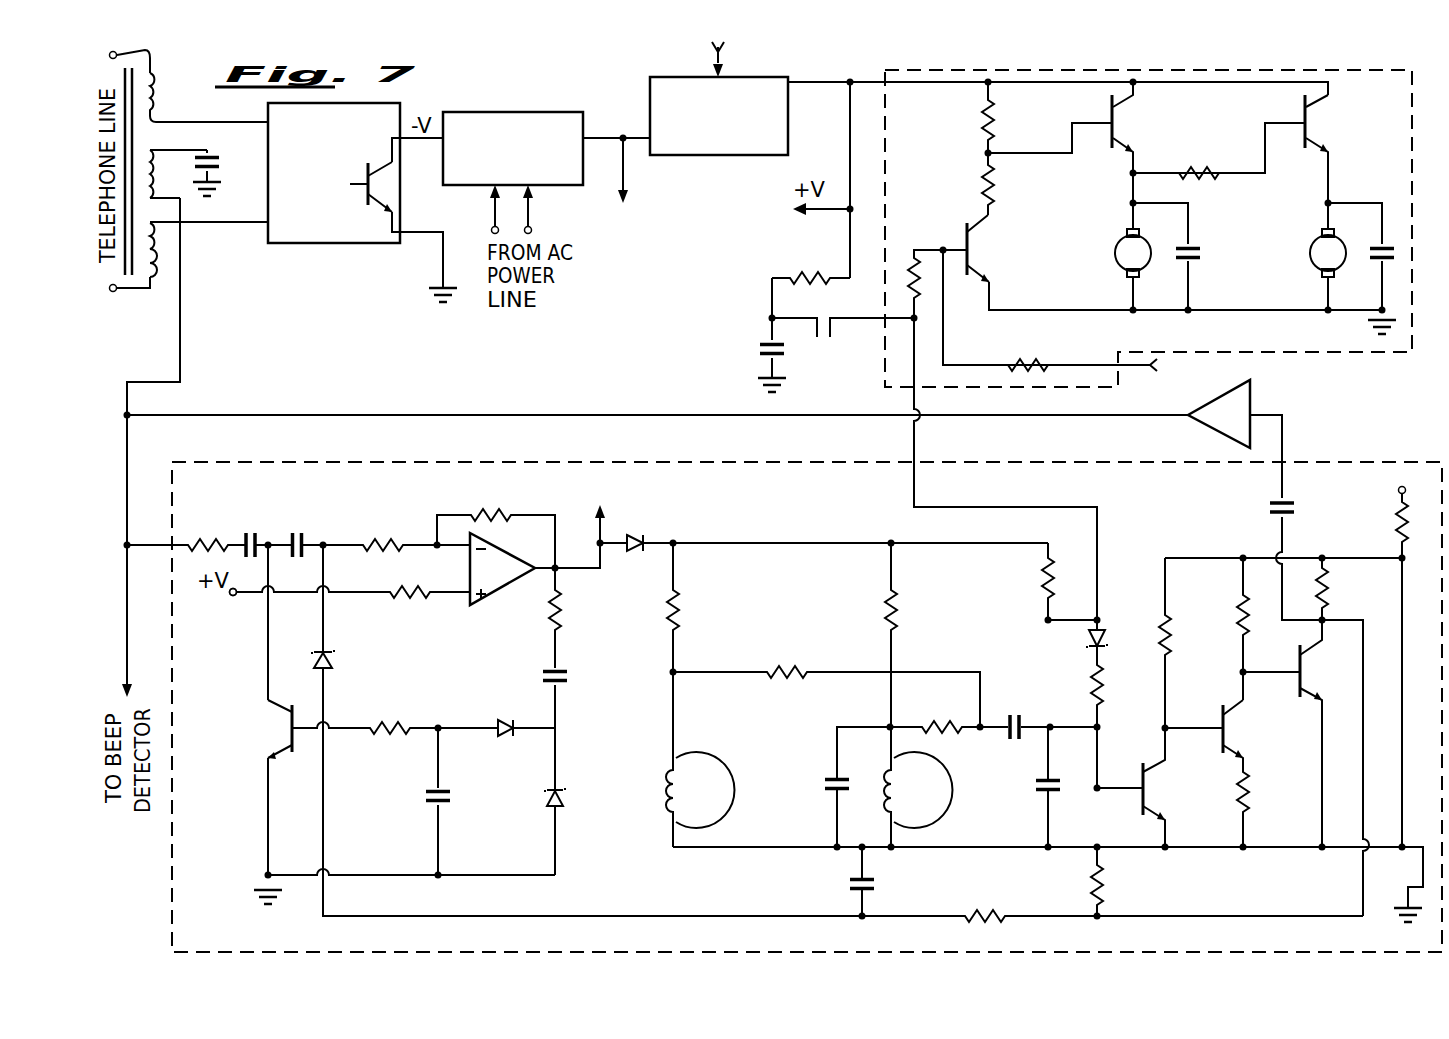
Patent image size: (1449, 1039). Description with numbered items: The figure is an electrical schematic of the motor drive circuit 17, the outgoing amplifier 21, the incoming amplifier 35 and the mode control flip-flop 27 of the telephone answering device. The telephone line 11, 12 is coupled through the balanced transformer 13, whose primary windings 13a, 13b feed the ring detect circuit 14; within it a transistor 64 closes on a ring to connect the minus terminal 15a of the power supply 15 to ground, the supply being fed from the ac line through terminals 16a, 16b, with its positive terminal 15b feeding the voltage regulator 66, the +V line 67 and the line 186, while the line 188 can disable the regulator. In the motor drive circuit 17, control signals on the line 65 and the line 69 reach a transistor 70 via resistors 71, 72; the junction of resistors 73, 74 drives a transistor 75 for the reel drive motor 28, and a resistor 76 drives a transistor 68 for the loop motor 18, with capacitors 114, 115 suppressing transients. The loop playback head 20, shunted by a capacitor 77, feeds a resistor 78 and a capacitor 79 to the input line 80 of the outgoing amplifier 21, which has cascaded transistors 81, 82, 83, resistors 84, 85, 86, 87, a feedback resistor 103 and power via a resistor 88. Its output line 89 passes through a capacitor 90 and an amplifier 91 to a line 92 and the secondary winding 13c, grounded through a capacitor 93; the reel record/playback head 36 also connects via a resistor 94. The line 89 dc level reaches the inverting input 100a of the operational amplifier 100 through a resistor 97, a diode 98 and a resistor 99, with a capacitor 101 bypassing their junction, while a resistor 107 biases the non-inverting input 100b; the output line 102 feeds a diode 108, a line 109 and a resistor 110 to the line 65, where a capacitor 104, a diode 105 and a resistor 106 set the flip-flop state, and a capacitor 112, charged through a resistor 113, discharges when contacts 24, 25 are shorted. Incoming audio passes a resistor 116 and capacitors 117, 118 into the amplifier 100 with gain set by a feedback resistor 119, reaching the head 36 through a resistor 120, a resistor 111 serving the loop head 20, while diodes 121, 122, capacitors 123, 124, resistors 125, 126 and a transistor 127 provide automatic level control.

The telephone line 11 is at (154, 47).
The telephone line 12 is at (113, 293).
The balanced transformer 13 is at (170, 80).
The primary winding 13a is at (157, 108).
The primary winding 13b is at (157, 262).
The secondary winding 13c is at (178, 174).
The ring detect circuit 14 is at (313, 250).
The power supply 15 is at (472, 186).
The minus terminal 15a is at (421, 141).
The positive terminal 15b is at (600, 141).
The terminal 16a is at (490, 232).
The terminal 16b is at (532, 230).
The motor drive circuit 17 is at (1312, 76).
The loop motor 18 is at (1311, 244).
The loop playback head 20 is at (952, 790).
The outgoing amplifier 21 is at (1152, 855).
The contact 24 is at (817, 337).
The contact 25 is at (830, 337).
The mode control flip-flop 27 is at (807, 707).
The reel drive motor 28 is at (1116, 244).
The incoming amplifier 35 is at (416, 826).
The reel record/playback head 36 is at (728, 780).
The transistor 64 is at (362, 175).
The line 65 is at (916, 440).
The voltage regulator 66 is at (711, 158).
The +V line 67 is at (848, 128).
The transistor 68 is at (1300, 100).
The line 69 is at (1128, 367).
The transistor 70 is at (962, 228).
The resistor 71 is at (910, 262).
The resistor 72 is at (1042, 340).
The resistor 73 is at (982, 124).
The resistor 74 is at (996, 187).
The transistor 75 is at (1106, 100).
The resistor 76 is at (1202, 163).
The capacitor 77 is at (832, 775).
The resistor 78 is at (946, 718).
The capacitor 79 is at (1019, 716).
The input line 80 is at (1100, 765).
The transistor 81 is at (1140, 806).
The transistor 82 is at (1218, 748).
The transistor 83 is at (1298, 692).
The resistor 84 is at (1172, 650).
The resistor 85 is at (1248, 625).
The resistor 86 is at (1250, 790).
The resistor 87 is at (1330, 590).
The resistor 88 is at (1397, 525).
The line 89 is at (1280, 529).
The capacitor 90 is at (1290, 502).
The amplifier 91 is at (1252, 398).
The line 92 is at (442, 413).
The capacitor 93 is at (213, 158).
The resistor 94 is at (788, 665).
The resistor 97 is at (983, 914).
The diode 98 is at (333, 662).
The resistor 99 is at (397, 541).
The operational amplifier 100 is at (508, 600).
The inverting input 100a is at (460, 548).
The non-inverting input 100b is at (447, 598).
The capacitor 101 is at (858, 885).
The line 102 is at (602, 570).
The resistor 103 is at (1102, 884).
The capacitor 104 is at (1046, 792).
The diode 105 is at (1102, 643).
The resistor 106 is at (1101, 702).
The resistor 107 is at (408, 608).
The diode 108 is at (690, 525).
The line 109 is at (795, 548).
The resistor 110 is at (1044, 580).
The resistor 111 is at (895, 607).
The capacitor 112 is at (760, 349).
The resistor 113 is at (824, 272).
The capacitor 114 is at (1385, 243).
The capacitor 115 is at (1191, 248).
The resistor 116 is at (203, 540).
The capacitor 117 is at (270, 520).
The capacitor 118 is at (303, 540).
The feedback resistor 119 is at (503, 520).
The resistor 120 is at (677, 608).
The diode 121 is at (514, 720).
The diode 122 is at (560, 785).
The capacitor 123 is at (565, 668).
The capacitor 124 is at (452, 790).
The resistor 125 is at (560, 610).
The resistor 126 is at (390, 742).
The transistor 127 is at (300, 762).
The line 186 is at (624, 162).
The line 188 is at (713, 52).